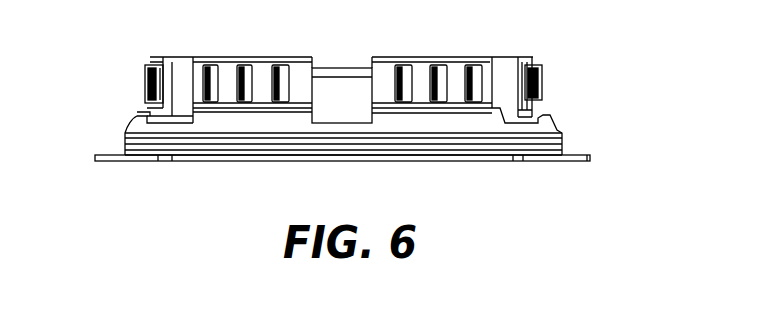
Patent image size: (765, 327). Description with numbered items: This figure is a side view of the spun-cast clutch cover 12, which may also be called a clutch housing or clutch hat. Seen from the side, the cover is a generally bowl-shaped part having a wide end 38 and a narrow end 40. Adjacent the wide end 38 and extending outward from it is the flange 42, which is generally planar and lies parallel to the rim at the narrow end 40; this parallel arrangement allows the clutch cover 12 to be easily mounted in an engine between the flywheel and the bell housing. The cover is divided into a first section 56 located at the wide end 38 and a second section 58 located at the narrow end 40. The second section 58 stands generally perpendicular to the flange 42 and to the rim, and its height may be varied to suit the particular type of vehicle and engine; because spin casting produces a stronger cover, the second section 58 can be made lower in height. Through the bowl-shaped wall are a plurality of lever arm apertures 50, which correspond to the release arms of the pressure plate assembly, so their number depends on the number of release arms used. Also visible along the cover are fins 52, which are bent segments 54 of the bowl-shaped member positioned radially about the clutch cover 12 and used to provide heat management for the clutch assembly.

The clutch cover 12 is at (493, 34).
The wide end 38 is at (558, 128).
The narrow end 40 is at (533, 56).
The flange 42 is at (122, 154).
The lever arm apertures 50 is at (313, 88).
The fins 52 is at (246, 65).
The bent segments 54 is at (288, 65).
The first section 56 is at (135, 112).
The second section 58 is at (150, 64).